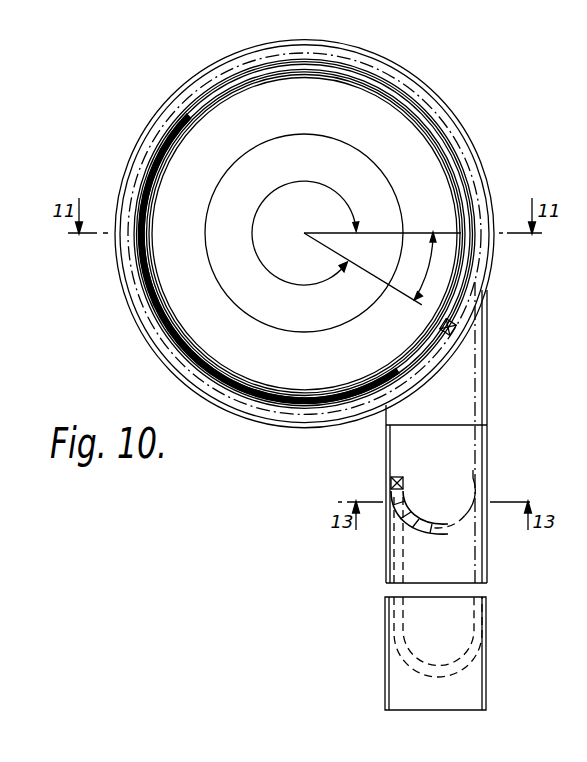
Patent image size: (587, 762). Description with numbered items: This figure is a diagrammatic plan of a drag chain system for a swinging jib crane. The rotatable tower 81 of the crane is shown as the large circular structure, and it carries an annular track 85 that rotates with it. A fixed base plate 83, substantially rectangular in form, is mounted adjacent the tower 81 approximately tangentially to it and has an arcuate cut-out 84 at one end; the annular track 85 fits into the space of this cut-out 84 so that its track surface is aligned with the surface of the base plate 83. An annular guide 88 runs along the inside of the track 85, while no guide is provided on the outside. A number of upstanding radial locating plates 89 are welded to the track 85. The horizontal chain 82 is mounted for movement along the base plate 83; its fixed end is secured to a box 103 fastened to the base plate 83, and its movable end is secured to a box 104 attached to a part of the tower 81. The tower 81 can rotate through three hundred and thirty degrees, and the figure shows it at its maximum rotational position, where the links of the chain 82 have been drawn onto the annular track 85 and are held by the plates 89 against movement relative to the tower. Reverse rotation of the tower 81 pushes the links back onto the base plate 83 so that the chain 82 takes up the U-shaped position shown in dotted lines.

The rotatable tower 81 is at (200, 368).
The chain 82 is at (398, 617).
The base plate 83 is at (400, 681).
The arcuate cut-out 84 is at (407, 396).
The annular track 85 is at (232, 58).
The annular guide 88 is at (147, 215).
The radial locating plates 89 is at (213, 397).
The box 103 is at (399, 477).
The box 104 is at (441, 325).